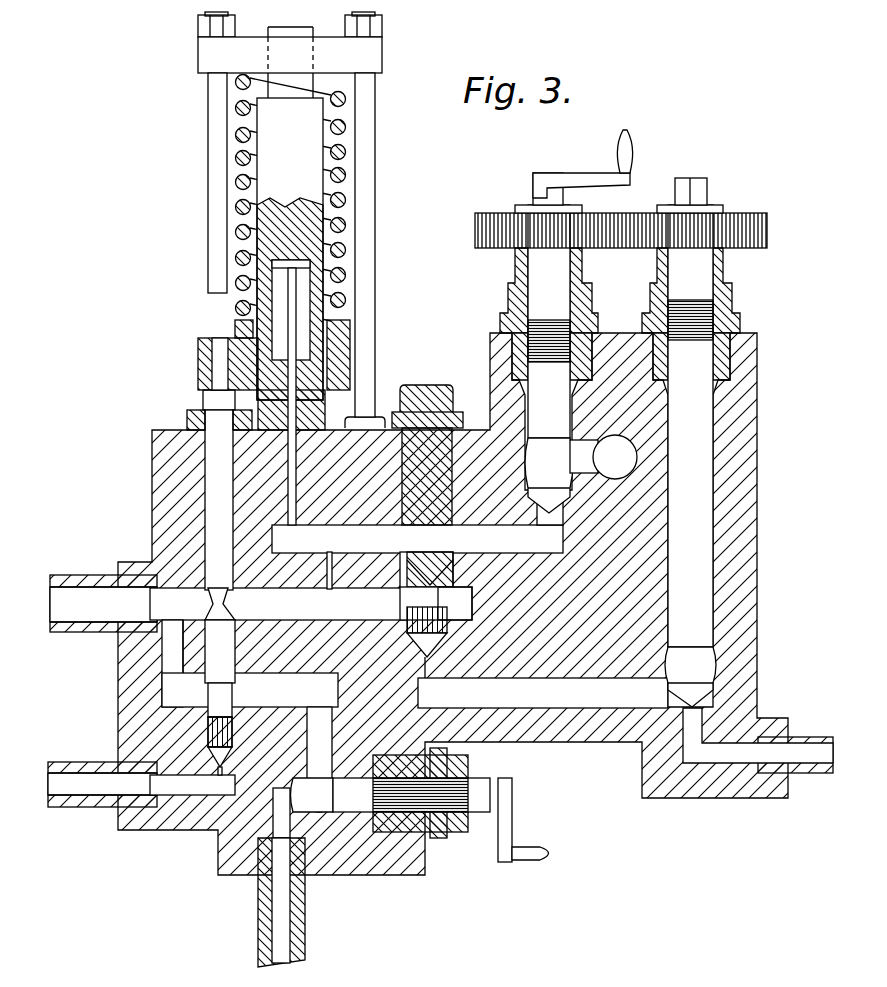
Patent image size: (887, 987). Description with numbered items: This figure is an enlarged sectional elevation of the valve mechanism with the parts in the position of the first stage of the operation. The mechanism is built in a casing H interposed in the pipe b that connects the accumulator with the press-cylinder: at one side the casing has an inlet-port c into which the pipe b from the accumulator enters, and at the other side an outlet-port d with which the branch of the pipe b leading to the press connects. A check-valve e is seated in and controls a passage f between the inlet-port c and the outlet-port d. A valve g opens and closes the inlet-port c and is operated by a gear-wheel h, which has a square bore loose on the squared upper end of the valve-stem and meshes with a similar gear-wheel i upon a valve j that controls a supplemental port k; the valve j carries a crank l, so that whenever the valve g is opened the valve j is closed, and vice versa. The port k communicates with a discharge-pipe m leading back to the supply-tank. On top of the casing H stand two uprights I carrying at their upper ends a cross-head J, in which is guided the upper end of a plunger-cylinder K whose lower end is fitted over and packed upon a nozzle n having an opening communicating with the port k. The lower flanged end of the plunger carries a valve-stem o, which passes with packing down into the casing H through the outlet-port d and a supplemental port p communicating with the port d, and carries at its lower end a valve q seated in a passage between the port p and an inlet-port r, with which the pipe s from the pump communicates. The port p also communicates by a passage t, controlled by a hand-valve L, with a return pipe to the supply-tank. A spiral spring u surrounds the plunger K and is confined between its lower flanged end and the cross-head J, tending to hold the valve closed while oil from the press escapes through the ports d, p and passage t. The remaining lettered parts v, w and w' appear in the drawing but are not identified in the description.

The casing H is at (453, 604).
The cross-head J is at (275, 42).
The plunger-cylinder K is at (290, 213).
The uprights I is at (284, 245).
The spiral spring u is at (352, 200).
The collar v is at (233, 326).
The nozzle n is at (360, 409).
The valve-stem o is at (219, 582).
The pipe b is at (441, 676).
The outlet-port d is at (278, 604).
The passage w is at (346, 581).
The supplemental port k is at (429, 499).
The valve q is at (214, 728).
The supplemental port p is at (250, 663).
The pipe s is at (102, 772).
The inlet-port r is at (192, 784).
The passage t is at (303, 772).
The nozzle w' is at (297, 902).
The hand-valve L is at (441, 805).
The check-valve e is at (436, 604).
The passage f is at (436, 680).
The inlet-port c is at (543, 693).
The valve g is at (691, 456).
The valve j is at (549, 365).
The discharge-pipe m is at (603, 457).
The gear-wheel i is at (611, 226).
The gear-wheel h is at (721, 211).
The crank l is at (583, 167).